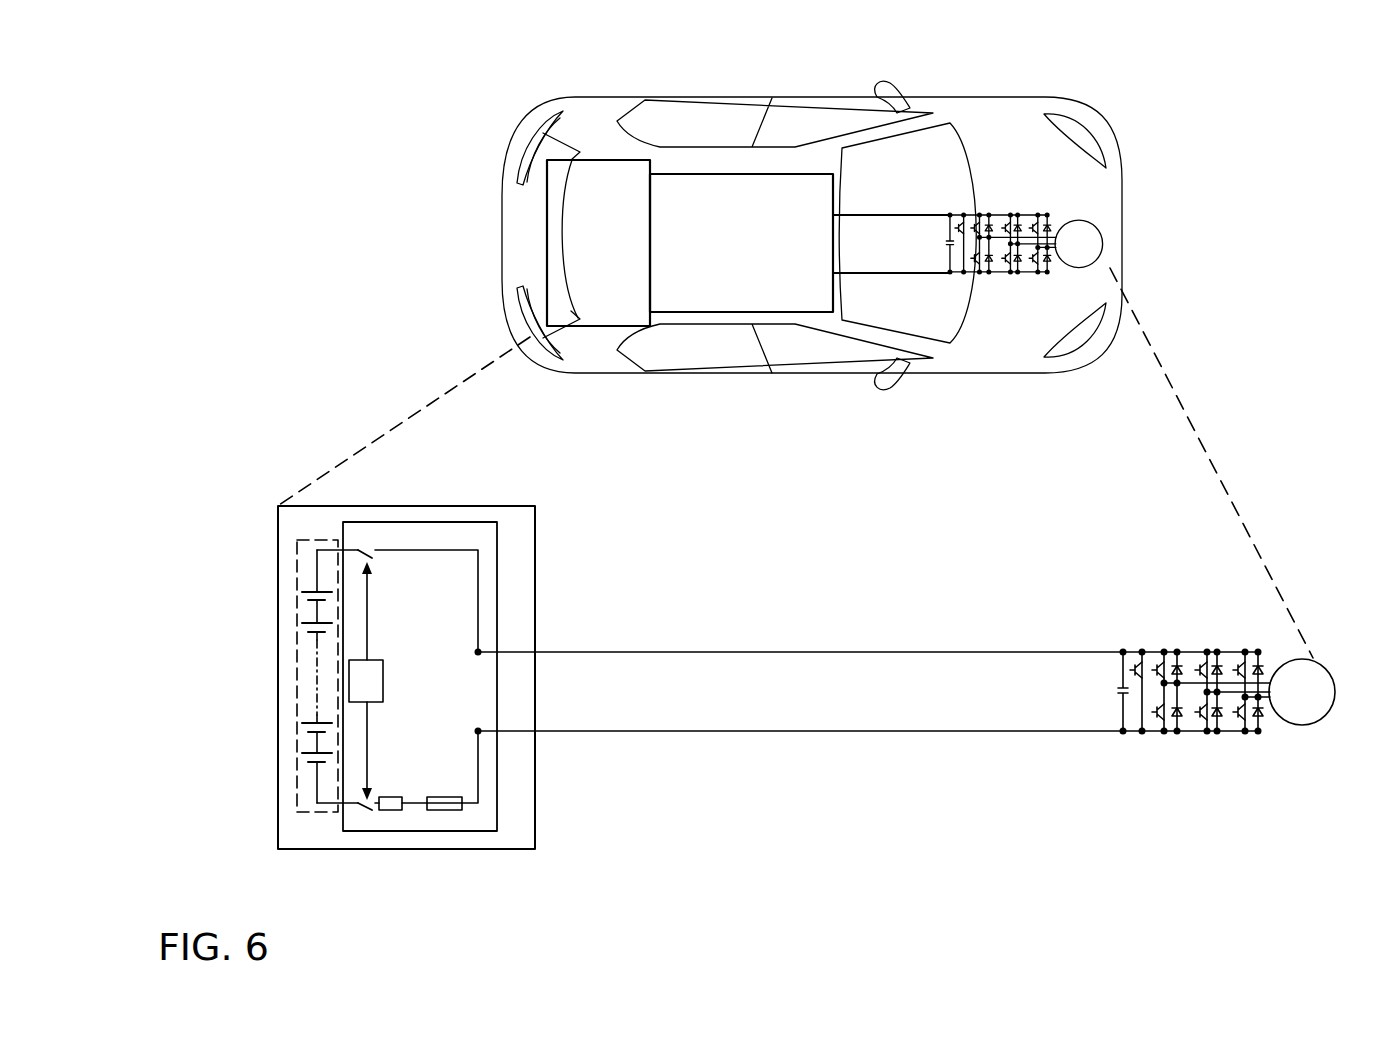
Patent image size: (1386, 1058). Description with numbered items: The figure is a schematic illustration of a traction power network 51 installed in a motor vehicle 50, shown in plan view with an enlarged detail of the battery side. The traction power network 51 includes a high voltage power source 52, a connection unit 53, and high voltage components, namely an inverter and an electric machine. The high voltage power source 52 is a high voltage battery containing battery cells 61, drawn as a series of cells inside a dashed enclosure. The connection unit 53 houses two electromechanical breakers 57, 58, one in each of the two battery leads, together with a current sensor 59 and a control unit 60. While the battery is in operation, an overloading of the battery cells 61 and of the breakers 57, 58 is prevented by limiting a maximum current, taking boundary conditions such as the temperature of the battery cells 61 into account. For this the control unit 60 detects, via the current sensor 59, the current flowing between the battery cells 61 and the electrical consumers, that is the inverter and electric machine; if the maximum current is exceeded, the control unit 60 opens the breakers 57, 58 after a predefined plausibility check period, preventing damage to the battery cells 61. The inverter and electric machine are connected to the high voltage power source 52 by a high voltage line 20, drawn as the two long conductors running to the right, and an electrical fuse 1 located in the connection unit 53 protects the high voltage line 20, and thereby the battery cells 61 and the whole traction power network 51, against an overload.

The electrical fuse 1 is at (452, 808).
The high voltage line 20 is at (789, 729).
The motor vehicle 50 is at (584, 140).
The traction power network 51 is at (777, 678).
The high voltage power source 52 is at (297, 640).
The connection unit 53 is at (360, 832).
The electromechanical breaker 57 is at (374, 831).
The electromechanical breaker 58 is at (374, 519).
The current sensor 59 is at (393, 808).
The control unit 60 is at (365, 682).
The battery cells 61 is at (283, 689).